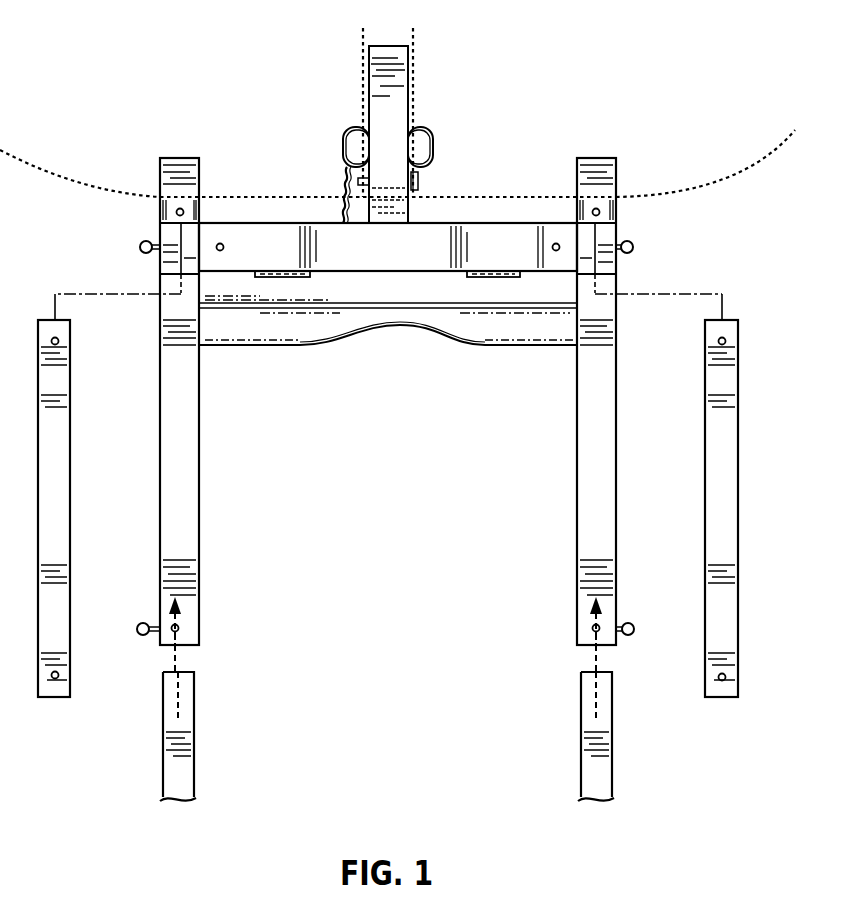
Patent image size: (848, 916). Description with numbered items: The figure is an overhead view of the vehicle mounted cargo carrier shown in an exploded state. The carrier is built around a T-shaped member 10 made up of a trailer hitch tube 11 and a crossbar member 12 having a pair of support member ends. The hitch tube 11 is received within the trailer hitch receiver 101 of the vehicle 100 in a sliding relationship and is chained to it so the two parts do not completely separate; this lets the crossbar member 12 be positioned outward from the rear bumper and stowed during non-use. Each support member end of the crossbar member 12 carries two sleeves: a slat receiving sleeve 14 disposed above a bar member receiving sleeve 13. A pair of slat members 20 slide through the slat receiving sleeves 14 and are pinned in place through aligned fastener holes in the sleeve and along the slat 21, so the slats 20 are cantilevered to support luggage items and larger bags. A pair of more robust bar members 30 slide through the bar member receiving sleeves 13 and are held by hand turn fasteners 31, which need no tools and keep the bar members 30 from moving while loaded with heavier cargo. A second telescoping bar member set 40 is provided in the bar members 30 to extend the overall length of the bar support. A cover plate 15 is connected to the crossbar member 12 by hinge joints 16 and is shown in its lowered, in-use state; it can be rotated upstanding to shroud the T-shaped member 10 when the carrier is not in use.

The T-shaped member 10 is at (388, 359).
The trailer hitch tube 11 is at (377, 104).
The crossbar member 12 is at (265, 242).
The bar member receiving sleeve 13 is at (168, 232).
The slat receiving sleeve 14 is at (170, 212).
The cover plate 15 is at (403, 318).
The hinge joint 16 is at (288, 278).
The slat member 20 is at (60, 467).
The fastener holes along the slat 21 is at (59, 341).
The bar member 30 is at (172, 436).
The hand turn fastener 31 is at (140, 247).
The second telescoping bar member set 40 is at (166, 722).
The vehicle 100 is at (741, 172).
The trailer hitch receiver 101 is at (413, 67).